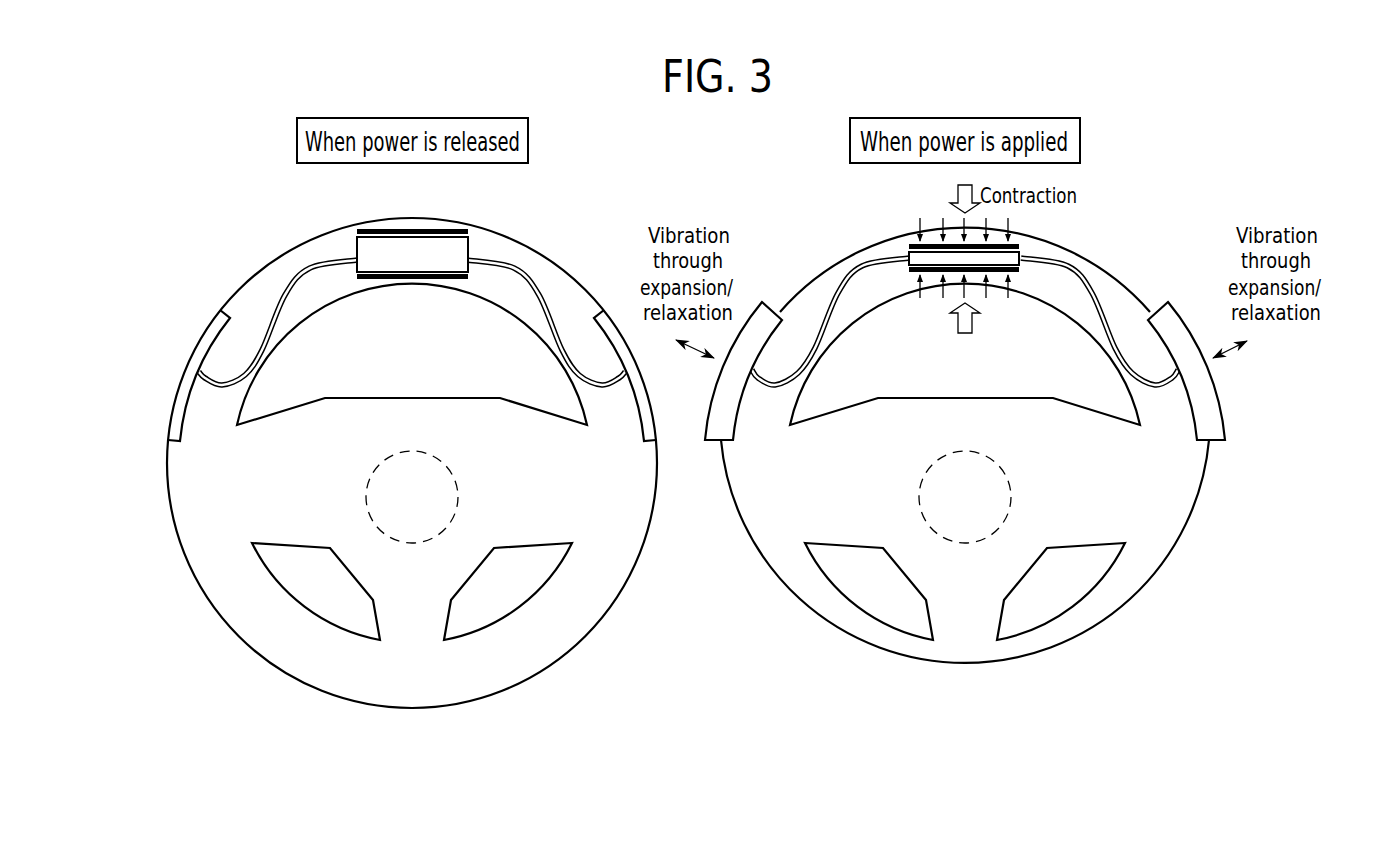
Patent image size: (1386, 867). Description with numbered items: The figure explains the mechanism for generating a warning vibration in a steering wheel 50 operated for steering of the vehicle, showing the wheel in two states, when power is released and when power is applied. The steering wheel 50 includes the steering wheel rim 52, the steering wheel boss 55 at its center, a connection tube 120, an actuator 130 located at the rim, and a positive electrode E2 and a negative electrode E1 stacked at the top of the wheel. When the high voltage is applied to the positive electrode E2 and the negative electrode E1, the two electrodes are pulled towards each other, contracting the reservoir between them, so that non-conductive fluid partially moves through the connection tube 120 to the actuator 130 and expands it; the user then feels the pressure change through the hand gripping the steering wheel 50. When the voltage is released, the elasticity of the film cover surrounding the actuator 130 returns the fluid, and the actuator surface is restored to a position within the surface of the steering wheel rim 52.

The steering wheel 50 is at (574, 666).
The steering wheel rim 52 is at (720, 465).
The steering wheel boss 55 is at (412, 543).
The connection tube 120 is at (290, 288).
The actuator 130 is at (206, 330).
The negative electrode E1 is at (457, 278).
The positive electrode E2 is at (467, 232).